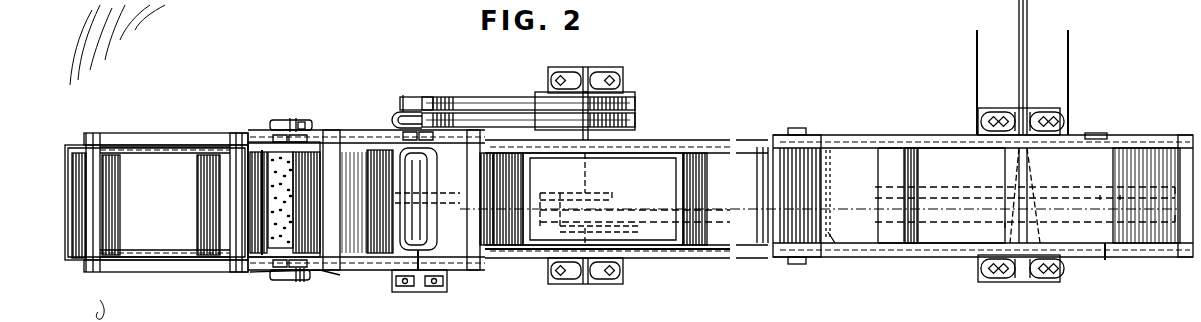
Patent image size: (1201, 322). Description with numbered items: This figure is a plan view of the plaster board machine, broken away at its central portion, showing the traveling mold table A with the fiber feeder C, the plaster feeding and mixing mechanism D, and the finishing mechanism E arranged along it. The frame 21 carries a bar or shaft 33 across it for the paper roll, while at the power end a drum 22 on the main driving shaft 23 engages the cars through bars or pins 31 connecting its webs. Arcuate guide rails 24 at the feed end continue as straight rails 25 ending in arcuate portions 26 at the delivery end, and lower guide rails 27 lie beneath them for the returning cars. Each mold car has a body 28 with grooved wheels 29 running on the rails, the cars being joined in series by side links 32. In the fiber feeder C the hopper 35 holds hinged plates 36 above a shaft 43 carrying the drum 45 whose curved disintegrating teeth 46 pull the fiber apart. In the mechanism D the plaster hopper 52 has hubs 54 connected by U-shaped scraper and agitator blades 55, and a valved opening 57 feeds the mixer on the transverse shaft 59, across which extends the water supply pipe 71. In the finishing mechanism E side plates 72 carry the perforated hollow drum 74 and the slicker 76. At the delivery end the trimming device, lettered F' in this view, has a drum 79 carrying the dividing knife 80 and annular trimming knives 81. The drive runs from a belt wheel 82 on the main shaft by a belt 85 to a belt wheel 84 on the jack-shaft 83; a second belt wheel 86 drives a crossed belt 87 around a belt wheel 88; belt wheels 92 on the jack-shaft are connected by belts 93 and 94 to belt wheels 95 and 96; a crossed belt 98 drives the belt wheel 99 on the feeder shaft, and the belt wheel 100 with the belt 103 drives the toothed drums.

The frame 21 is at (236, 270).
The drum 22 is at (940, 190).
The shaft 23 is at (1028, 282).
The arcuate guide rails 24 is at (78, 262).
The straight rails 25 is at (668, 258).
The arcuate portions 26 is at (1150, 135).
The guide rails 27 is at (160, 146).
The body 28 is at (950, 240).
The grooved wheels 29 is at (178, 262).
The bar or pin 31 is at (960, 198).
The links 32 is at (205, 262).
The bar or shaft 33 is at (100, 140).
The hopper 35 is at (268, 160).
The plates 36 is at (355, 248).
The shaft 43 is at (285, 280).
The drum 45 is at (275, 160).
The curved disintegrating teeth 46 is at (262, 262).
The hopper 52 is at (378, 150).
The hub 54 is at (413, 262).
The U-shaped scraper and agitator blades 55 is at (430, 180).
The valved opening 57 is at (398, 150).
The transverse shaft 59 is at (424, 278).
The water supply pipe 71 is at (504, 250).
The plate 72 is at (515, 250).
The hollow drum 74 is at (485, 250).
The smoothing plate or slicker 76 is at (645, 160).
The drum 79 is at (790, 150).
The knife 80 is at (800, 195).
The annular trimming or gaging knife 81 is at (822, 243).
The belt wheel 82 is at (1110, 257).
The jack-shaft 83 is at (590, 285).
The belt wheel 84 is at (640, 210).
The belt 85 is at (722, 230).
The second belt wheel 86 is at (612, 192).
The crossed belt 87 is at (612, 198).
The belt wheel 88 is at (450, 200).
The belt wheels 92 is at (630, 118).
The belt 93 is at (503, 99).
The belt 94 is at (478, 116).
The belt wheel 95 is at (432, 97).
The belt wheel 96 is at (450, 98).
The crossed belt 98 is at (318, 272).
The belt wheel 99 is at (300, 282).
The belt wheel 100 is at (310, 120).
The belt 103 is at (300, 120).
The traveling mold table A is at (859, 130).
The fiber feeder C is at (327, 120).
The plaster feeding and mixing mechanism D is at (466, 295).
The finishing mechanism E is at (660, 150).
The belt section F' is at (831, 132).